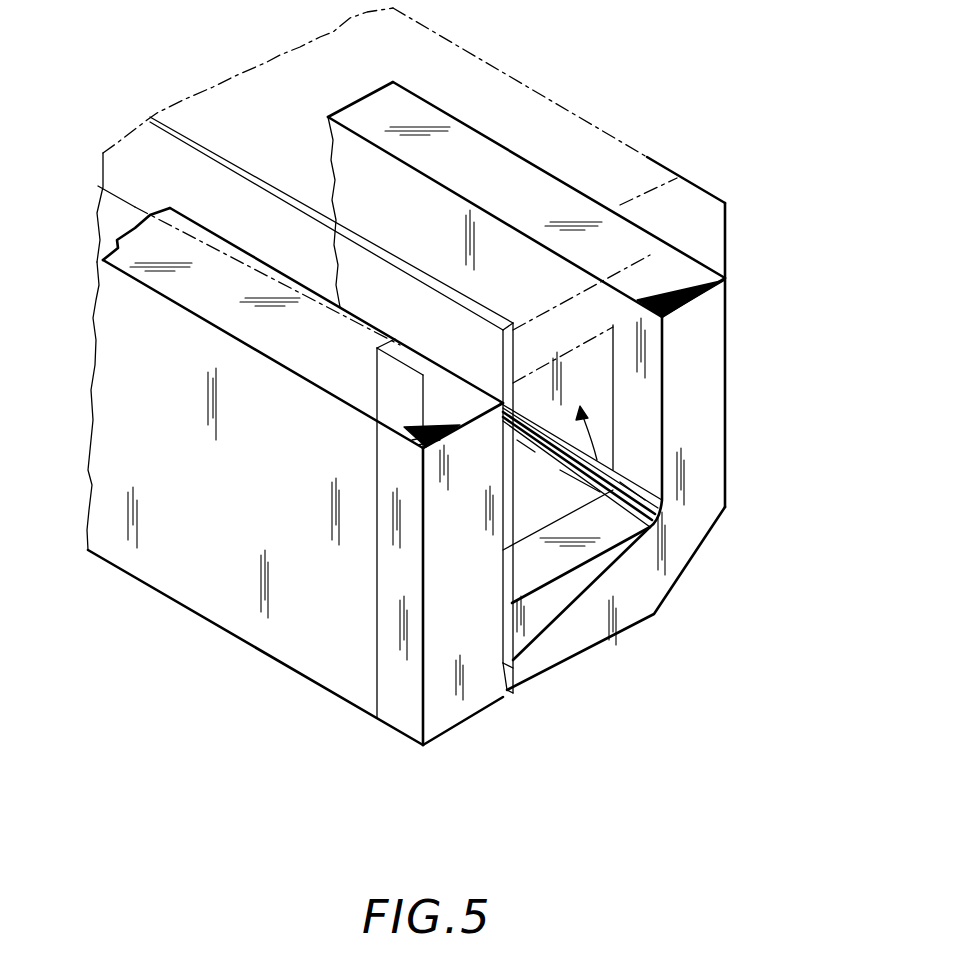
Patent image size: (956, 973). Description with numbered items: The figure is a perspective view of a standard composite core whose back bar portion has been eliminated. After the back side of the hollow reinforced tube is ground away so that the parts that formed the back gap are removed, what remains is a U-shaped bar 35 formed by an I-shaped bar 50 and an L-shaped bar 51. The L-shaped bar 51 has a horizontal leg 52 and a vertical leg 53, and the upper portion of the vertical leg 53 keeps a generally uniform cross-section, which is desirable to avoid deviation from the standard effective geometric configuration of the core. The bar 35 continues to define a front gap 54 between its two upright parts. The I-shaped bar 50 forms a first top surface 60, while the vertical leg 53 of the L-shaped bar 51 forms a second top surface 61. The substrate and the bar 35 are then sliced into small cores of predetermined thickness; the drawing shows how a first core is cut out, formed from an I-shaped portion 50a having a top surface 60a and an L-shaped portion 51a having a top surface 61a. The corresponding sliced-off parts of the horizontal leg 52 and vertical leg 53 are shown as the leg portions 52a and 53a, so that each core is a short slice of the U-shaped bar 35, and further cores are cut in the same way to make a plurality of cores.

The U-shaped bar 35 is at (267, 680).
The I-shaped bar 50 is at (208, 603).
The I-shaped portion 50a is at (393, 710).
The L-shaped bar 51 is at (650, 527).
The L-shaped portion 51a is at (728, 463).
The horizontal leg 52 is at (532, 515).
The bottom face of channel 52a is at (590, 627).
The vertical leg 53 is at (590, 370).
The side wall of channel 53a is at (690, 420).
The front gap 54 is at (520, 690).
The first top surface 60 is at (160, 243).
The top surface 60a is at (410, 417).
The second top surface 61 is at (493, 163).
The top surface 61a is at (687, 273).